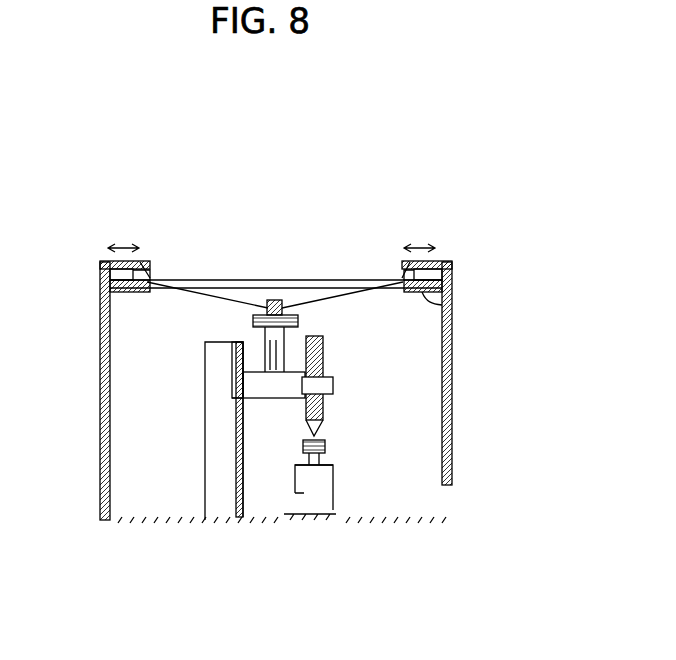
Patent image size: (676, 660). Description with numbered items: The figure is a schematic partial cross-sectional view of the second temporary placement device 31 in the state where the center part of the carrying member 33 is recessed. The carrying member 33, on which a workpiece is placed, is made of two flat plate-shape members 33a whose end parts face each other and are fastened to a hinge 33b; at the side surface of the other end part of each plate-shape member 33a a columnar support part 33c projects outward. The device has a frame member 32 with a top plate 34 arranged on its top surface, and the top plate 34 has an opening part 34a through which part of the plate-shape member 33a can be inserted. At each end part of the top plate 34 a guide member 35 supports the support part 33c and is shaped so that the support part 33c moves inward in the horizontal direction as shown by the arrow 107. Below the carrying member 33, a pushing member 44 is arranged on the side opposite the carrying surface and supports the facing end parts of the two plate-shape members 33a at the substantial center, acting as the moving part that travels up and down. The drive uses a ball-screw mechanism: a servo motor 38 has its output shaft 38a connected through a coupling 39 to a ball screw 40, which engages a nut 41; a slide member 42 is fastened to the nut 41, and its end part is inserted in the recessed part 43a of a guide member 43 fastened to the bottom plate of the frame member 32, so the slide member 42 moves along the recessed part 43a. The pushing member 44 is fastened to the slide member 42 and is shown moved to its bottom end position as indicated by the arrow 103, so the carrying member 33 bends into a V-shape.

The second temporary placement device 31 is at (386, 188).
The frame member 32 is at (440, 522).
The carrying member 33 is at (408, 213).
The plate-shape member 33a is at (207, 280).
The hinge 33b is at (278, 300).
The support part 33c is at (140, 262).
The top plate 34 is at (100, 282).
The opening part 34a is at (452, 302).
The guide member 35 is at (110, 261).
The servo motor 38 is at (289, 512).
The output shaft 38a is at (334, 470).
The coupling 39 is at (326, 440).
The ball screw 40 is at (325, 408).
The nut 41 is at (333, 383).
The slide member 42 is at (280, 392).
The guide member 43 is at (208, 484).
The recessed part 43a is at (236, 400).
The pushing member 44 is at (253, 322).
The arrow 103 is at (240, 355).
The arrow 107 is at (121, 246).